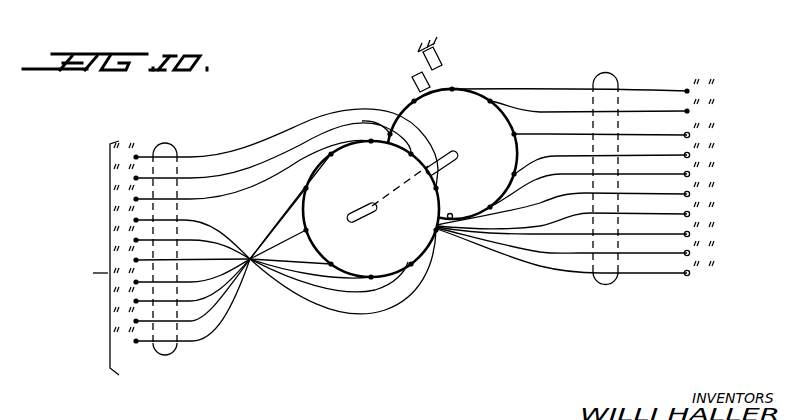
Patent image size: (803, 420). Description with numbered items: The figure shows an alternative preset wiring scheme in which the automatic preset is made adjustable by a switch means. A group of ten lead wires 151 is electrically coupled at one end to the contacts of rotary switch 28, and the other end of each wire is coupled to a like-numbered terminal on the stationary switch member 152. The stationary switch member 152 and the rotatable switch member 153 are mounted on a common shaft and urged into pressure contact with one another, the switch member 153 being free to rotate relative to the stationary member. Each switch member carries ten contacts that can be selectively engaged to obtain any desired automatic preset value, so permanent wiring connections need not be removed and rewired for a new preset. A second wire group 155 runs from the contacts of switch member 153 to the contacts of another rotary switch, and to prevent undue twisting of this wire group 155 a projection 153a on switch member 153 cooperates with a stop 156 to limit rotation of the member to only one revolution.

The rotary switch 28 is at (66, 302).
The group of ten lead wires 151 is at (168, 356).
The stationary switch member 152 is at (390, 263).
The rotatable switch member 153 is at (463, 100).
The projection 153a is at (411, 82).
The wire group 155 is at (607, 284).
The stop 156 is at (442, 52).